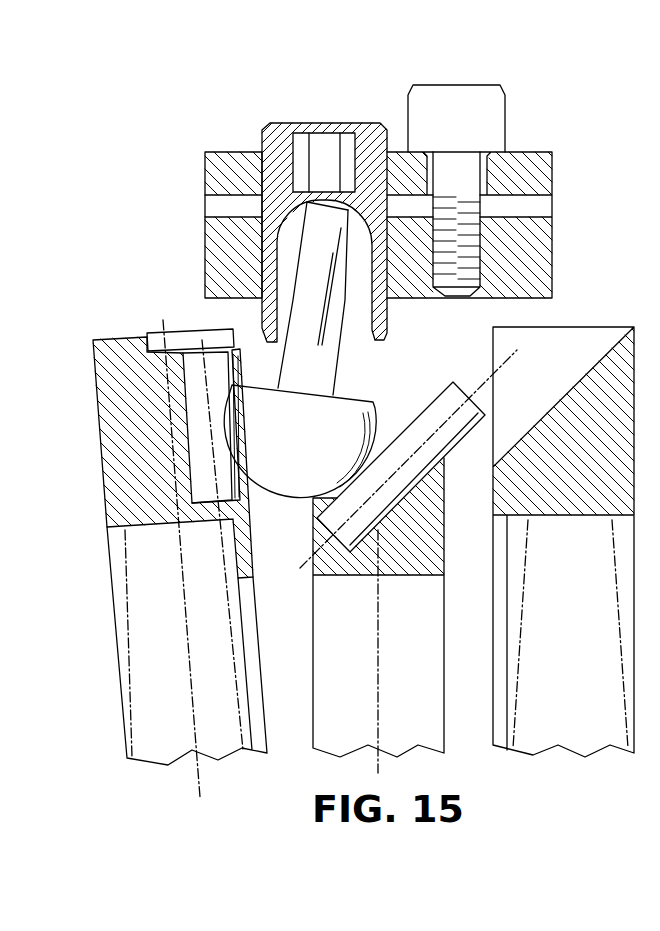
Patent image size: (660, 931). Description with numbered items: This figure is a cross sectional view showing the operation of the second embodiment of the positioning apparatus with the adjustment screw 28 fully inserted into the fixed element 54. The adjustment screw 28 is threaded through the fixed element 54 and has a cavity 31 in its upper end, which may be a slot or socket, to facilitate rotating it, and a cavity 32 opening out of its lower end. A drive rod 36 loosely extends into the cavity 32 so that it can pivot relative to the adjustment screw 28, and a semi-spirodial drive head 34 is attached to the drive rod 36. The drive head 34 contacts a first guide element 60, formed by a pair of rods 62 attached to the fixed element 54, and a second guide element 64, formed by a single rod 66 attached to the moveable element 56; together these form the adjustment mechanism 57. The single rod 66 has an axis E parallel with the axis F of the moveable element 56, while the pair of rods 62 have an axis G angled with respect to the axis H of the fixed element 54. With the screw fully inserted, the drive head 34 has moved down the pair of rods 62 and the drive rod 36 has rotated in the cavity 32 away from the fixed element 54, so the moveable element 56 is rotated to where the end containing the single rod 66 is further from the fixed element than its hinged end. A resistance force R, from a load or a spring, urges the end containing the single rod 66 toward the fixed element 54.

The adjustment screw 28 is at (262, 122).
The cavity 31 is at (325, 148).
The cavity 32 is at (363, 320).
The drive head 34 is at (291, 443).
The drive rod 36 is at (335, 367).
The fixed element 54 is at (444, 650).
The moveable element 56 is at (93, 340).
The adjustment mechanism 57 is at (245, 319).
The first guide element 60 is at (461, 455).
The rods 62 is at (484, 407).
The second guide element 64 is at (260, 503).
The single rod 66 is at (183, 423).
The resistance force R is at (85, 455).
The axis of single rod E is at (218, 543).
The axis of moveable element F is at (195, 777).
The axis of pair of rods G is at (514, 355).
The axis of fixed element H is at (378, 657).